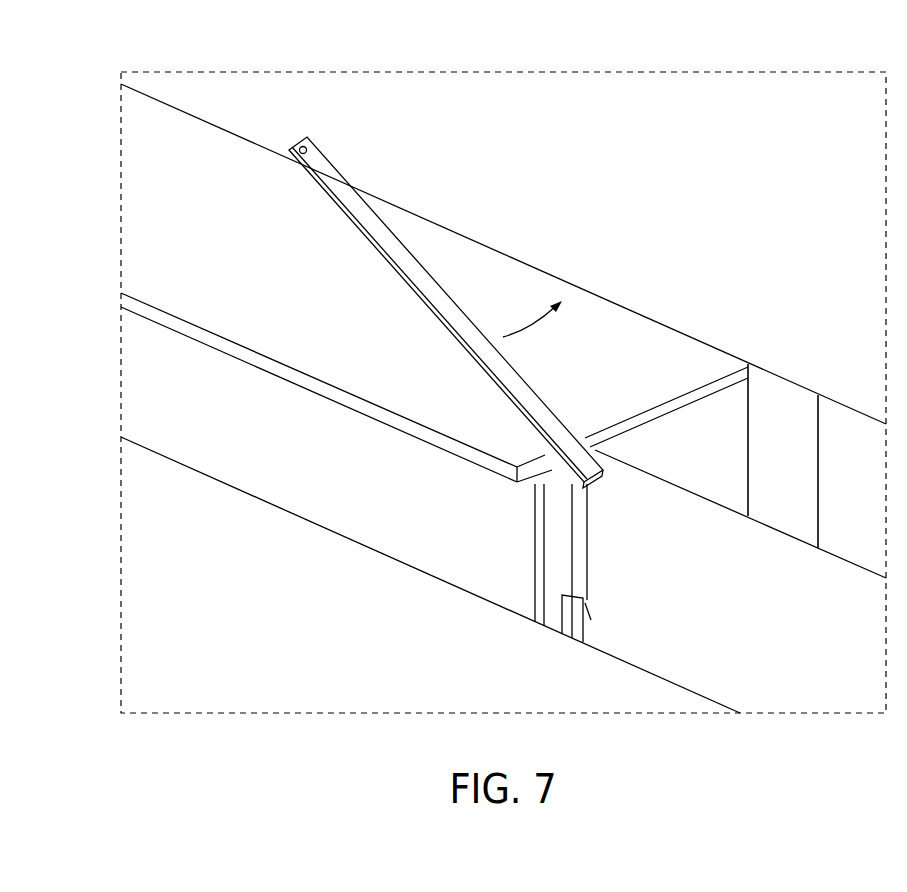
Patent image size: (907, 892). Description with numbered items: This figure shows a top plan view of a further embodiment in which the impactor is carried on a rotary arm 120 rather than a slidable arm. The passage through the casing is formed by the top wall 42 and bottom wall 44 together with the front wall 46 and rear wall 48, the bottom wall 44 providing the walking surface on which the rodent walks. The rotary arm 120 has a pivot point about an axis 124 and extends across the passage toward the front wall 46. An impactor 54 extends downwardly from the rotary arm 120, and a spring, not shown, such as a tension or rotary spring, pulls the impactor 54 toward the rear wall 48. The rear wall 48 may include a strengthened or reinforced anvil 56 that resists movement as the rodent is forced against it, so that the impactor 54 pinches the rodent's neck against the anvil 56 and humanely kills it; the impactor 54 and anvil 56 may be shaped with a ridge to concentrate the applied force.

The top wall 42 is at (627, 352).
The bottom wall 44 is at (745, 632).
The front wall 46 is at (343, 515).
The rear wall 48 is at (707, 418).
The impactor 54 is at (585, 612).
The anvil 56 is at (788, 430).
The rotary arm 120 is at (399, 240).
The axis 124 is at (304, 138).